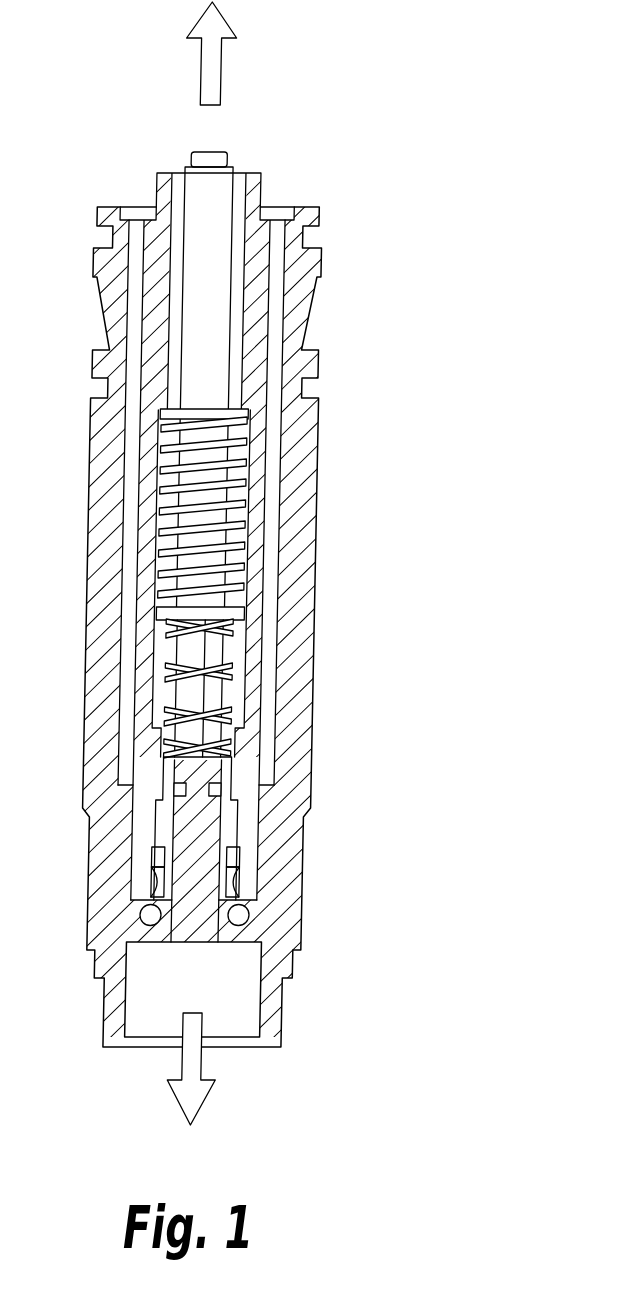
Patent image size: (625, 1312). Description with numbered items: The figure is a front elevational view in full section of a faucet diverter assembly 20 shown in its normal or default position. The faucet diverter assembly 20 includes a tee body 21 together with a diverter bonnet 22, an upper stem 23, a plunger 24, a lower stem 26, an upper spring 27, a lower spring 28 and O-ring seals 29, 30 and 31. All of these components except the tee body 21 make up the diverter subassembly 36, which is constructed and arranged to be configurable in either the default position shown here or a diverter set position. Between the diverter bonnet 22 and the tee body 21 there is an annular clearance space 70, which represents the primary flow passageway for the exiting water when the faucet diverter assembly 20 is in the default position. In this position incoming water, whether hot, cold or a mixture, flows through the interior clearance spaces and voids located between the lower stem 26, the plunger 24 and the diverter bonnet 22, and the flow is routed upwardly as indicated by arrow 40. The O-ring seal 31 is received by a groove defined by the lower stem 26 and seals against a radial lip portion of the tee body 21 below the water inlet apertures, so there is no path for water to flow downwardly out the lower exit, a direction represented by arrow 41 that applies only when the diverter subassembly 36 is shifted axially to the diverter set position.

The faucet diverter assembly 20 is at (503, 295).
The tee body 21 is at (300, 437).
The diverter bonnet 22 is at (272, 253).
The upper stem 23 is at (192, 302).
The plunger 24 is at (240, 832).
The lower stem 26 is at (170, 820).
The upper spring 27 is at (242, 500).
The lower spring 28 is at (246, 680).
The O-ring seal 29 is at (166, 790).
The O-ring seal 30 is at (240, 856).
The O-ring seal 31 is at (140, 918).
The diverter subassembly 36 is at (150, 589).
The arrow 40 is at (213, 62).
The arrow 41 is at (195, 1062).
The annular clearance space 70 is at (277, 307).